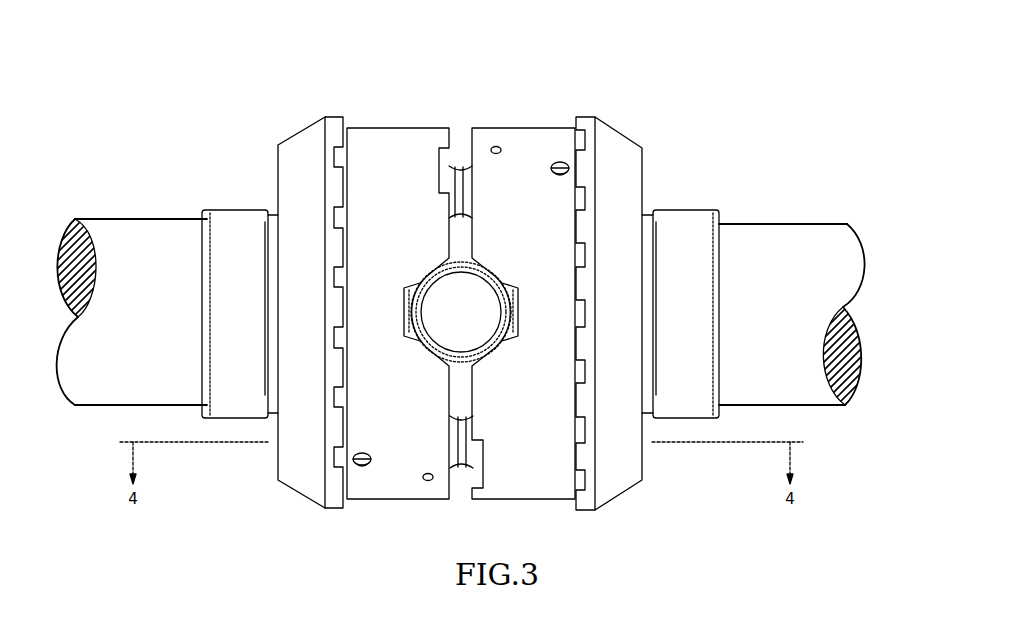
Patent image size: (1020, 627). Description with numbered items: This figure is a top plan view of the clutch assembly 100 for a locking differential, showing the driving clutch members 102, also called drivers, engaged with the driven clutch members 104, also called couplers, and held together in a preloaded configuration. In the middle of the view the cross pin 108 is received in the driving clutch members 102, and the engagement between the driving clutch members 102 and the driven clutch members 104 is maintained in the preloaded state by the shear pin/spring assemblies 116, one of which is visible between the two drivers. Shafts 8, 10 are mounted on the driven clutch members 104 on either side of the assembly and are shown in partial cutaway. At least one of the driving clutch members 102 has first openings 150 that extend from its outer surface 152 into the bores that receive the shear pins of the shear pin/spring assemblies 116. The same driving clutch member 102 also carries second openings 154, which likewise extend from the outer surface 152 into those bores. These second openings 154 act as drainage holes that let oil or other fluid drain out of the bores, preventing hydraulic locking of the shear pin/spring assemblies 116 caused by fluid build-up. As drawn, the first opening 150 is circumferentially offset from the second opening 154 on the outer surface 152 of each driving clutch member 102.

The clutch assembly 100 is at (280, 80).
The shaft 8 is at (780, 222).
The shaft 10 is at (150, 218).
The driving clutch member 102 is at (461, 286).
The driven clutch member 104 is at (295, 138).
The cross pin 108 is at (462, 313).
The shear pin/spring assembly 116 is at (459, 138).
The first opening 150 is at (494, 145).
The outer surface 152 is at (410, 228).
The second opening 154 is at (560, 160).